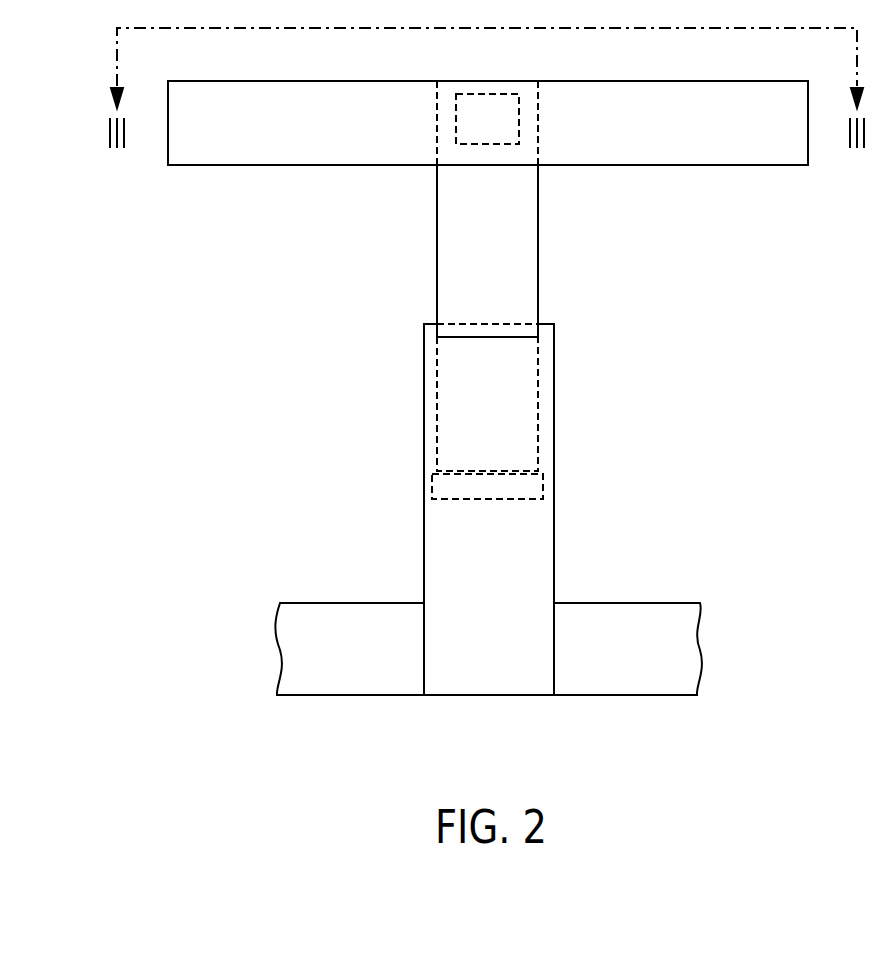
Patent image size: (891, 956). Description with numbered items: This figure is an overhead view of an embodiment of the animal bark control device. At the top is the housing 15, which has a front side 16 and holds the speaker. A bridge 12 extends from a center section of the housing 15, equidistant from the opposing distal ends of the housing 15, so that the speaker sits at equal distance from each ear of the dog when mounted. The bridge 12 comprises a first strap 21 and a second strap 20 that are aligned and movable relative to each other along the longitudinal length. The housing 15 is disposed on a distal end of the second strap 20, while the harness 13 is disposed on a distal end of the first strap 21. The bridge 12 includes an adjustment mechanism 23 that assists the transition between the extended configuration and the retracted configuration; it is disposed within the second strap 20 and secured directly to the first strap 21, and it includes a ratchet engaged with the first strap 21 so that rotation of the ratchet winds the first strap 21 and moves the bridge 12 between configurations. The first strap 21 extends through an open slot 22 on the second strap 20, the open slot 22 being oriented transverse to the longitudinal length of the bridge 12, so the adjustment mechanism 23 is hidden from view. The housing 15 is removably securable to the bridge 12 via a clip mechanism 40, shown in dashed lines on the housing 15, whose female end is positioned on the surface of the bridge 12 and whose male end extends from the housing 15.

The bridge 12 is at (566, 493).
The harness 13 is at (323, 602).
The housing 15 is at (228, 148).
The front side 16 is at (722, 81).
The second strap 20 is at (424, 524).
The first strap 21 is at (437, 264).
The open slot 22 is at (515, 322).
The adjustment mechanism 23 is at (527, 488).
The clip mechanism 40 is at (487, 107).